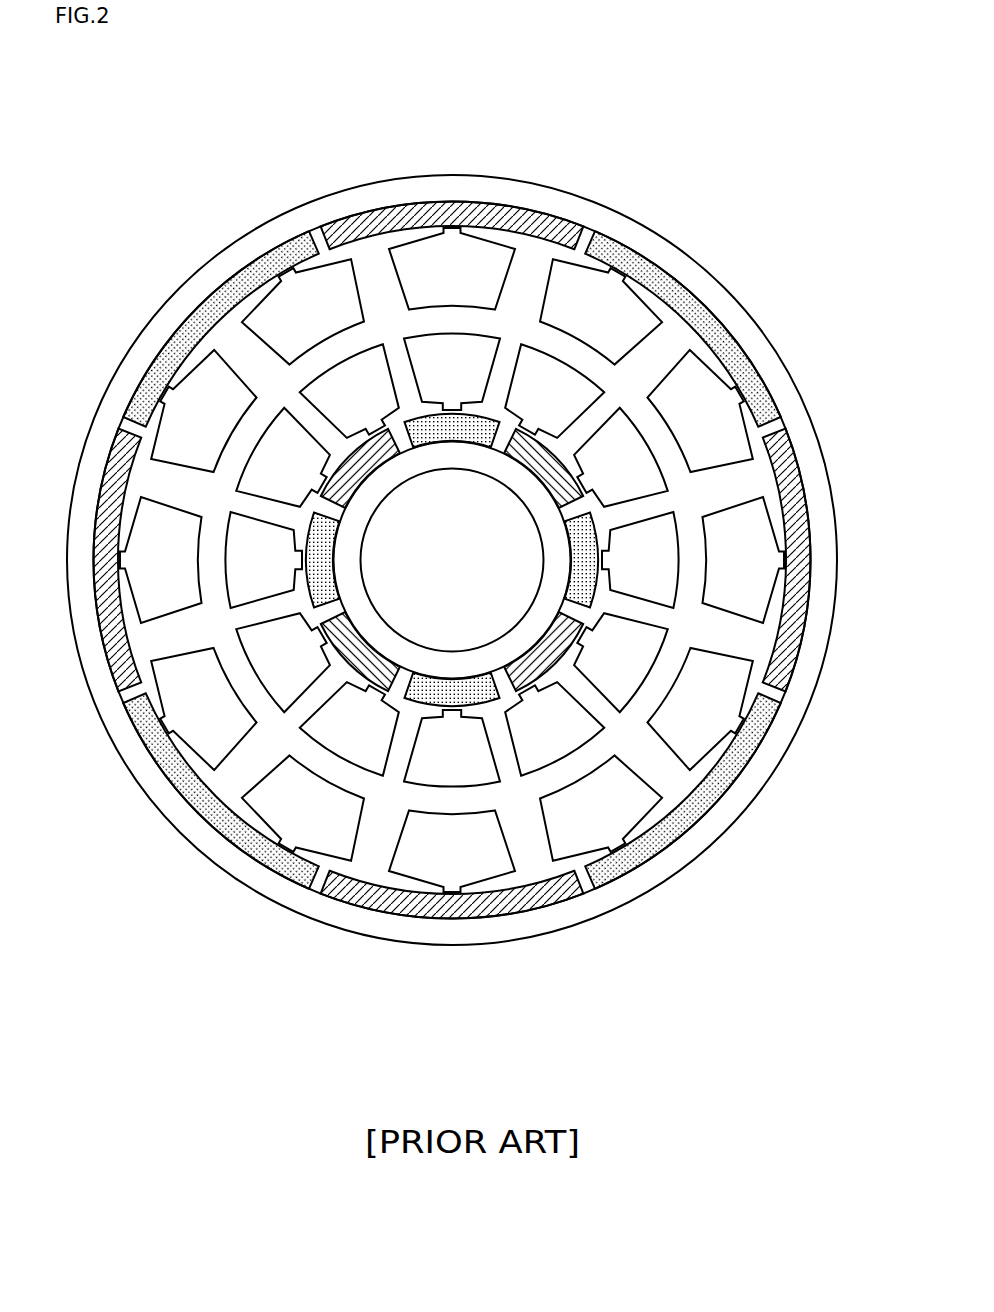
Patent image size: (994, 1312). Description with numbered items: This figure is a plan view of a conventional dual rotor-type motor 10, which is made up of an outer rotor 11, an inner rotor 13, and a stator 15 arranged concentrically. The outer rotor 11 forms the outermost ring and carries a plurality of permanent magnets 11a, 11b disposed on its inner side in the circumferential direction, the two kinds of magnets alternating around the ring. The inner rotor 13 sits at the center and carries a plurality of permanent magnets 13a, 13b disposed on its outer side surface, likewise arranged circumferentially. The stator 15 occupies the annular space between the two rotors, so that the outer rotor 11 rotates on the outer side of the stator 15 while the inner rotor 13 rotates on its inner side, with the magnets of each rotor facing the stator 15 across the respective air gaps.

The dual rotor-type motor 10 is at (218, 182).
The outer rotor 11 is at (732, 312).
The permanent magnet 11a is at (468, 206).
The permanent magnet 11b is at (648, 274).
The inner rotor 13 is at (553, 556).
The permanent magnet 13a is at (573, 657).
The permanent magnet 13b is at (487, 690).
The stator 15 is at (727, 487).